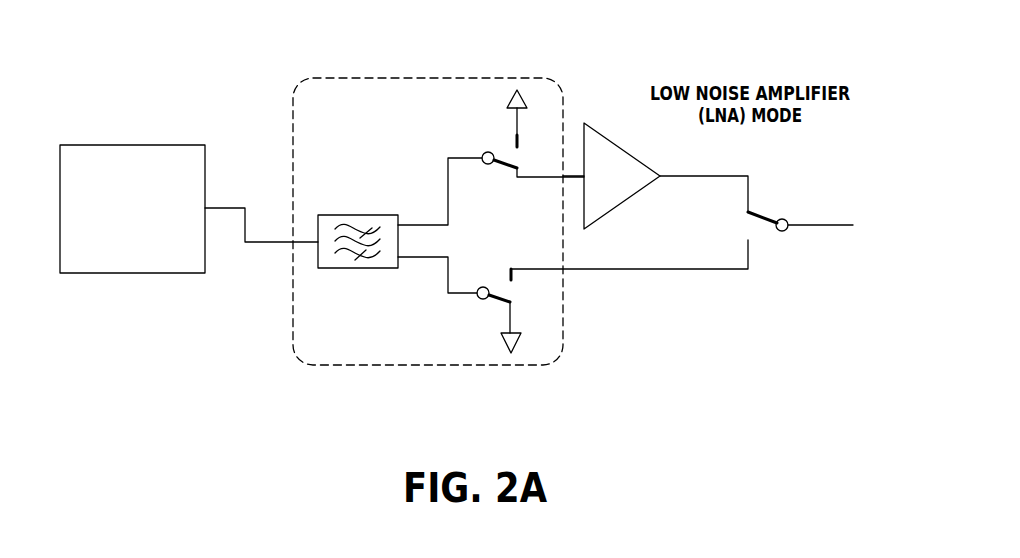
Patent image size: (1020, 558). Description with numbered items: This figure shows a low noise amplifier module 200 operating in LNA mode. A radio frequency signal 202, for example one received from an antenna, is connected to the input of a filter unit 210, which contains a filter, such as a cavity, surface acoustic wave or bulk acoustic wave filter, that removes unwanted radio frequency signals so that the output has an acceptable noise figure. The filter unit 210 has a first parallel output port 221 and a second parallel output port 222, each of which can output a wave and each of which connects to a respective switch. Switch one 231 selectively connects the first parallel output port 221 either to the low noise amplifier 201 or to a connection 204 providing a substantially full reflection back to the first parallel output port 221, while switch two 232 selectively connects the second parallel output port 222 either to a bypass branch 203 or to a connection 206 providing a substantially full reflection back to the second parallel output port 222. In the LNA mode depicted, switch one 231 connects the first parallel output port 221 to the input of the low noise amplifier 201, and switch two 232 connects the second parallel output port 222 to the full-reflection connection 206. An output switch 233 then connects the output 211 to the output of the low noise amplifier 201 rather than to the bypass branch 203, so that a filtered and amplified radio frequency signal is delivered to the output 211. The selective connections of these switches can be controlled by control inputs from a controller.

The front-end circuit 200 is at (240, 352).
The low noise amplifier 201 is at (618, 145).
The radio frequency signal 202 is at (113, 273).
The bypass branch 203 is at (646, 268).
The connection providing a substantially full reflection 204 is at (486, 118).
The connection providing a substantially full reflection 206 is at (482, 341).
The filter unit 210 is at (343, 193).
The output 211 is at (818, 209).
The first parallel output port 221 is at (424, 215).
The second parallel output port 222 is at (419, 267).
The switch 1 231 is at (525, 188).
The switch 2 232 is at (494, 283).
The output switch 233 is at (726, 225).